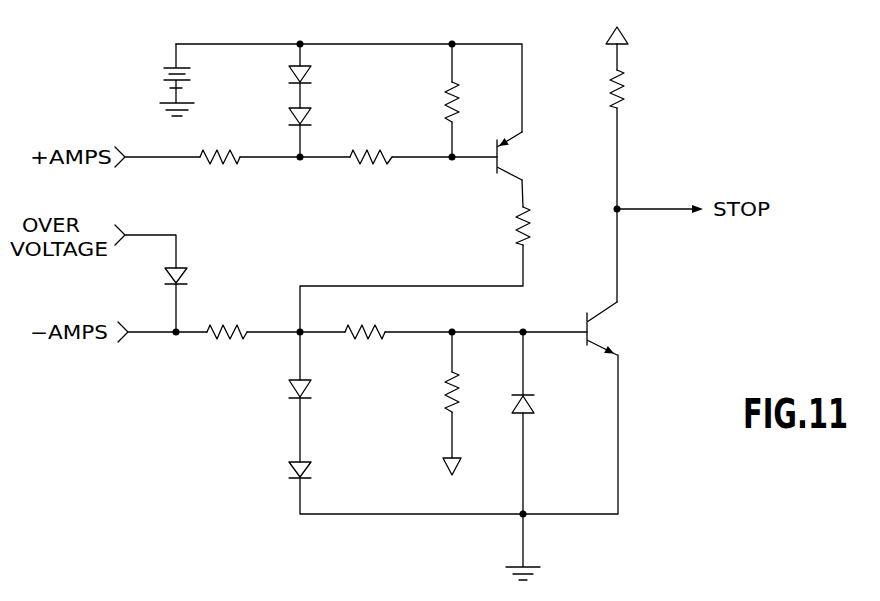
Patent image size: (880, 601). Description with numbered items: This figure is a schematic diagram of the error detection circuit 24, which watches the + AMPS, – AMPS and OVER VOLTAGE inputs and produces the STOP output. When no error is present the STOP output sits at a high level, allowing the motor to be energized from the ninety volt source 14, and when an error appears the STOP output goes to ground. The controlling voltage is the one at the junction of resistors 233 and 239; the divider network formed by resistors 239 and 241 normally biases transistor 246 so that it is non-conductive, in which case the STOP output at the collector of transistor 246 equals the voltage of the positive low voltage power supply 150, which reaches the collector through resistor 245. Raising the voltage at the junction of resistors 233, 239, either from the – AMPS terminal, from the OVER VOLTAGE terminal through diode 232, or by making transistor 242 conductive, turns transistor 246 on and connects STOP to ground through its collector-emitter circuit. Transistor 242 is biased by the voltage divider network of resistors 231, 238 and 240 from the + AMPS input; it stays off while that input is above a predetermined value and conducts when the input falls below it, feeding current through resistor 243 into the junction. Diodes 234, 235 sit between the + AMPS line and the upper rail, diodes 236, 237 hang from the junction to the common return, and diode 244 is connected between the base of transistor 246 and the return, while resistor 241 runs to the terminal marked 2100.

The 90 volt source 14 is at (164, 63).
The error detection circuit 24 is at (396, 227).
The positive low voltage power supply 150 is at (637, 37).
The resistor 231 is at (240, 149).
The diode 232 is at (188, 272).
The resistor 233 is at (226, 324).
The diode 234 is at (290, 75).
The diode 235 is at (288, 118).
The diode 236 is at (288, 385).
The diode 237 is at (286, 470).
The resistor 238 is at (371, 149).
The resistor 239 is at (374, 320).
The resistor 240 is at (434, 81).
The resistor 241 is at (436, 389).
The transistor 242 is at (512, 157).
The resistor 243 is at (539, 231).
The diode 244 is at (568, 388).
The resistor 245 is at (630, 86).
The transistor 246 is at (604, 329).
The supply terminal 2100 is at (491, 471).